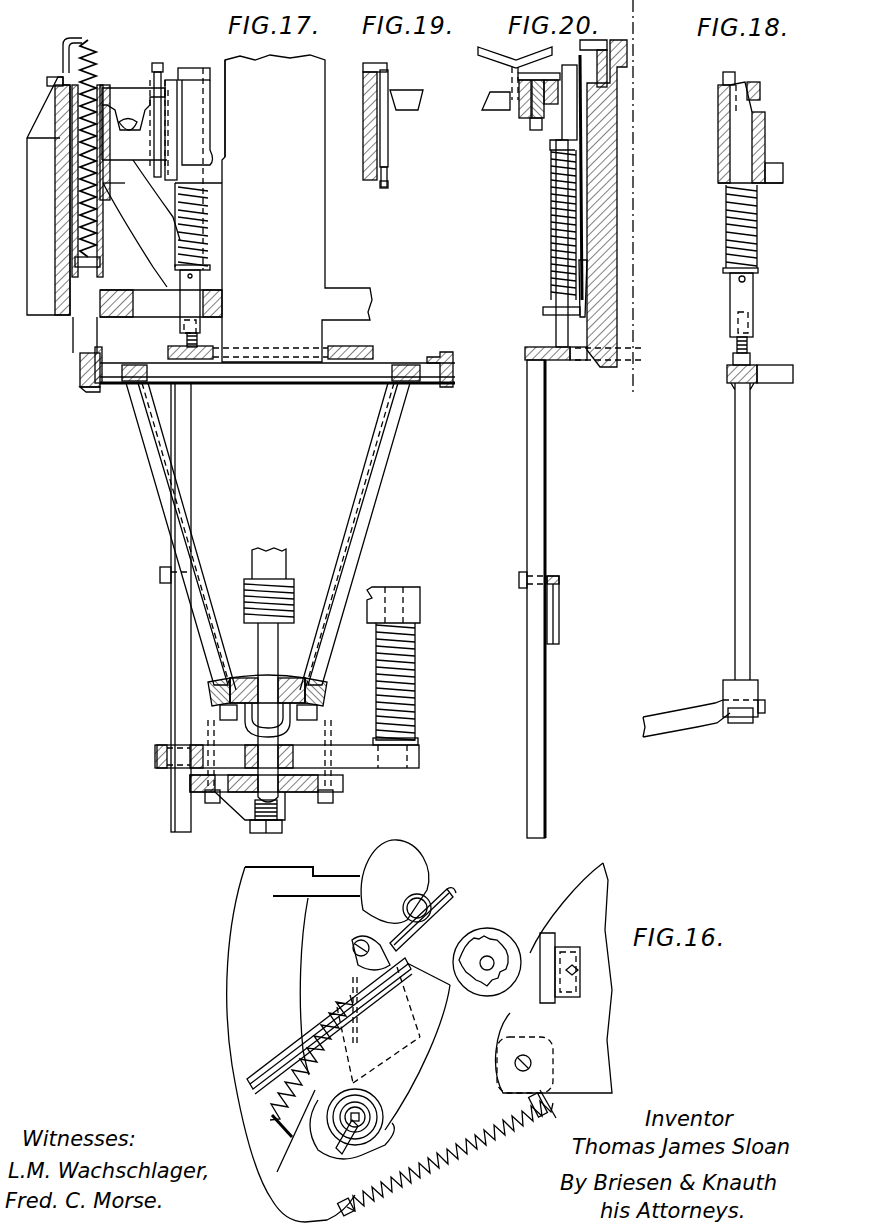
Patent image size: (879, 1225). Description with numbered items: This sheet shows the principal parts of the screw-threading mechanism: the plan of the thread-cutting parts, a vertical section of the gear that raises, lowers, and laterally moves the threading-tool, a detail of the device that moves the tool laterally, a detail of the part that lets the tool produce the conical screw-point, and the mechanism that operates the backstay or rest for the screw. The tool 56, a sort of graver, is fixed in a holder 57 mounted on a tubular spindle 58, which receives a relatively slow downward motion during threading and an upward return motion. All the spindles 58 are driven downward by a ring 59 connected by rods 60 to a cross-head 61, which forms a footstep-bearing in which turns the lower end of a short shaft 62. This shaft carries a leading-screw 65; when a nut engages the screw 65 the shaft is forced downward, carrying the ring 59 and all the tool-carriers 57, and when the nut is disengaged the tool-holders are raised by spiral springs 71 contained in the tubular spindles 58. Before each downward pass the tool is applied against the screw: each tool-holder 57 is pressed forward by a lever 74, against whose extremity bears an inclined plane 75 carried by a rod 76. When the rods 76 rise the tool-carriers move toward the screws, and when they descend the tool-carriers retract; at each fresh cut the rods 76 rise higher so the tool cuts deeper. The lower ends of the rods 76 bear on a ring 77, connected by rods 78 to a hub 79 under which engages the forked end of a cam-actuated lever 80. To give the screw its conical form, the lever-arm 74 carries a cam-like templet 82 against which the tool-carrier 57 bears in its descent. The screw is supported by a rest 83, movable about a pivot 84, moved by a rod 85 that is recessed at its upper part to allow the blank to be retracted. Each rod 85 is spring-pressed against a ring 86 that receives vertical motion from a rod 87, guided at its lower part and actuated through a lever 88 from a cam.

In FIG. 16, the tool 56 is at (470, 990).
In FIG. 17, the holder 57 is at (122, 97).
In FIG. 19, the holder 57 is at (417, 100).
In FIG. 20, the holder 57 is at (470, 125).
In FIG. 16, the holder 57 is at (417, 1037).
In FIG. 17, the tubular spindle 58 is at (58, 137).
In FIG. 16, the tubular spindle 58 is at (372, 1104).
In FIG. 17, the ring 59 is at (92, 387).
In FIG. 17, the rods 60 is at (160, 419).
In FIG. 17, the cross-head 61 is at (233, 790).
In FIG. 17, the short shaft 62 is at (266, 660).
In FIG. 17, the leading-screw 65 is at (258, 605).
In FIG. 17, the spiral springs 71 is at (92, 54).
In FIG. 16, the spiral springs 71 is at (366, 1118).
In FIG. 17, the lever 74 is at (123, 225).
In FIG. 19, the lever 74 is at (386, 164).
In FIG. 18, the lever 74 is at (760, 90).
In FIG. 16, the lever 74 is at (357, 977).
In FIG. 17, the inclined plane 75 is at (193, 72).
In FIG. 18, the inclined plane 75 is at (735, 103).
In FIG. 16, the inclined plane 75 is at (442, 890).
In FIG. 17, the rod 76 is at (200, 240).
In FIG. 18, the rod 76 is at (740, 297).
In FIG. 16, the rod 76 is at (410, 898).
In FIG. 17, the ring 77 is at (130, 385).
In FIG. 18, the ring 77 is at (727, 377).
In FIG. 17, the rods 78 is at (158, 472).
In FIG. 18, the rods 78 is at (740, 530).
In FIG. 17, the hub 79 is at (205, 696).
In FIG. 17, the lever 80 is at (247, 717).
In FIG. 18, the lever 80 is at (670, 725).
In FIG. 17, the templet 82 is at (158, 64).
In FIG. 19, the templet 82 is at (386, 144).
In FIG. 16, the templet 82 is at (367, 960).
In FIG. 20, the rest 83 is at (518, 108).
In FIG. 16, the rest 83 is at (477, 950).
In FIG. 20, the pivot 84 is at (532, 115).
In FIG. 16, the pivot 84 is at (488, 962).
In FIG. 20, the rod 85 is at (565, 125).
In FIG. 17, the ring 86 is at (366, 347).
In FIG. 20, the ring 86 is at (530, 347).
In FIG. 17, the rod 87 is at (181, 639).
In FIG. 20, the rod 87 is at (537, 478).
In FIG. 20, the lever 88 is at (560, 621).